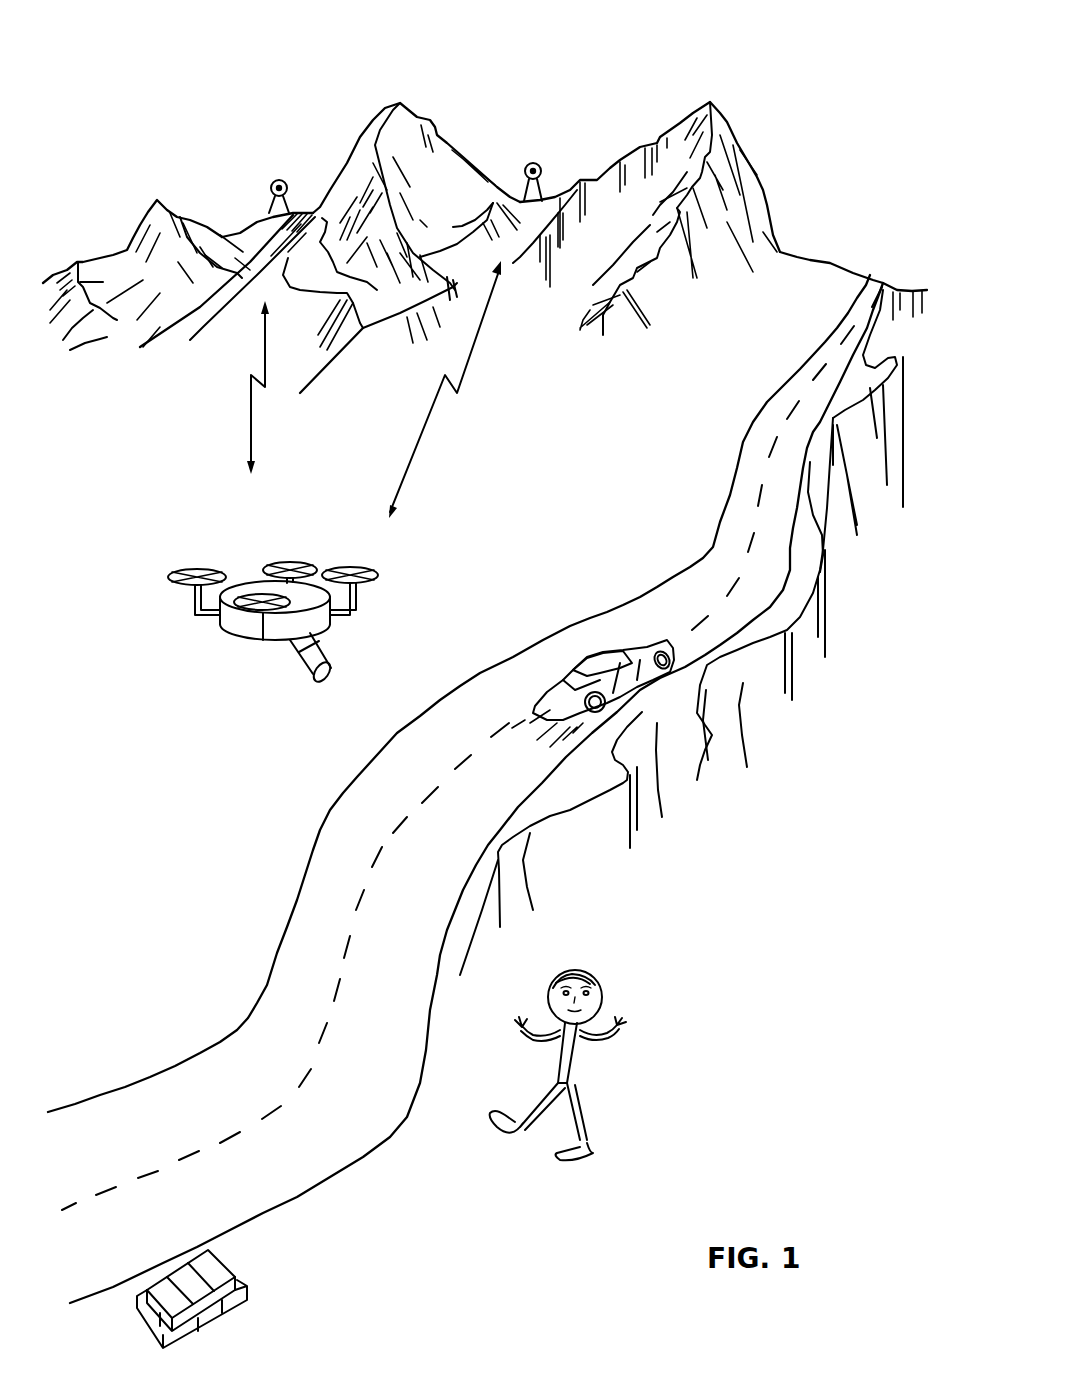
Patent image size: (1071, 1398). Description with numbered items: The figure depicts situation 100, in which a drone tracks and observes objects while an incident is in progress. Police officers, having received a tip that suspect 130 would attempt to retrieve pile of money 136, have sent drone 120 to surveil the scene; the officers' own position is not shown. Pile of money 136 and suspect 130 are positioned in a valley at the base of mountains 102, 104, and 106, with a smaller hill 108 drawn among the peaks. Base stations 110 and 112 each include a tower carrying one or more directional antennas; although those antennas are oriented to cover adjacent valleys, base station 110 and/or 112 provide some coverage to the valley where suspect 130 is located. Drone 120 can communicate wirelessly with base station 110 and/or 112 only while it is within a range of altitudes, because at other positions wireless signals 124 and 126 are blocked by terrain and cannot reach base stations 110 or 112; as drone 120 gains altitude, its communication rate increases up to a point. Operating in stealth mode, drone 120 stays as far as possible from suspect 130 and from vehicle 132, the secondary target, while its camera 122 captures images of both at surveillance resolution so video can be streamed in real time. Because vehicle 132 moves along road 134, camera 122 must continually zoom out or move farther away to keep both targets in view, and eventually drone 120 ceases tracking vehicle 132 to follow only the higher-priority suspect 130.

The situation 100 is at (137, 45).
The mountain 102 is at (140, 227).
The mountain 104 is at (405, 103).
The mountain 106 is at (715, 103).
The hill 108 is at (257, 217).
The base station 110 is at (282, 178).
The base station 112 is at (538, 165).
The drone 120 is at (269, 595).
The camera 122 is at (321, 667).
The wireless signal 124 is at (254, 416).
The wireless signal 126 is at (434, 410).
The suspect 130 is at (573, 969).
The vehicle 132 is at (597, 657).
The road 134 is at (743, 472).
The pile of money 136 is at (252, 1264).